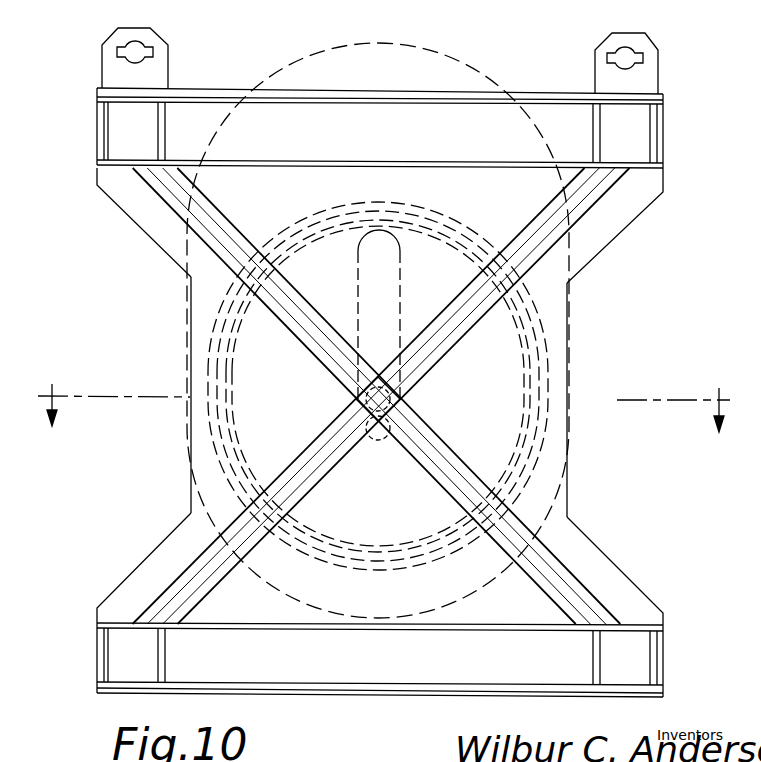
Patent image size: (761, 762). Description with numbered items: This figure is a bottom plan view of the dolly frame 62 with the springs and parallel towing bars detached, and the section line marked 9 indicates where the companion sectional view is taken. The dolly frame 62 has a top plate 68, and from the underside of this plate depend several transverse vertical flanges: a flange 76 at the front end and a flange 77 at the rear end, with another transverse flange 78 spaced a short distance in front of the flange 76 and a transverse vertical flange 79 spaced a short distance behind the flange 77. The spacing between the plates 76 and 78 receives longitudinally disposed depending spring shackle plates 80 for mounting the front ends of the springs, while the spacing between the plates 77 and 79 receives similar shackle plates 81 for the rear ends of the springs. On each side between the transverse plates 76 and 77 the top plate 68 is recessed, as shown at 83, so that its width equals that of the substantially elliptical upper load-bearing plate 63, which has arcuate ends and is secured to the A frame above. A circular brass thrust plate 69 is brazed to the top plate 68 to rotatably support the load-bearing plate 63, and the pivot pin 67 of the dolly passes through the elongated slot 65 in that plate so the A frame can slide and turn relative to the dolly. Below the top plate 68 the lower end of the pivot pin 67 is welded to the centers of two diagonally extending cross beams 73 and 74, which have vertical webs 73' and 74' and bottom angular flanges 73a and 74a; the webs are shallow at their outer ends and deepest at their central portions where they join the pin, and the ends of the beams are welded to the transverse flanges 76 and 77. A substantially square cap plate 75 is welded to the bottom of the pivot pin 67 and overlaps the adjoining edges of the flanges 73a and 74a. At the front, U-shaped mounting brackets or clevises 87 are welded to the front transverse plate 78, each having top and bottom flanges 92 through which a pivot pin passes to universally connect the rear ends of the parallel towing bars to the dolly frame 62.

The dolly frame 62 is at (100, 55).
The top and bottom flanges 92 is at (148, 40).
The U-shaped mounting brackets or clevises 87 is at (170, 58).
The spring shackle plates 80 is at (106, 108).
The transverse flange 78 is at (348, 99).
The transverse vertical flange 76 is at (426, 170).
The upper load-bearing plate 63 is at (440, 58).
The top plate 68 is at (652, 183).
The recess 83 is at (190, 278).
The circular brass thrust plate 69 is at (304, 270).
The elongated slot 65 is at (410, 276).
The pivot pin 67 is at (402, 398).
The cap plate 75 is at (371, 432).
The cross beam 73 is at (377, 396).
The vertical web 73' is at (384, 396).
The bottom angular flange 73a is at (243, 250).
The cross beam 74 is at (381, 396).
The vertical web 74' is at (389, 396).
The bottom angular flange 74a is at (228, 535).
The transverse vertical flange 77 is at (236, 623).
The transverse vertical flange 79 is at (330, 688).
The shackle plates 81 is at (105, 643).
The section line 9- 9 is at (384, 422).